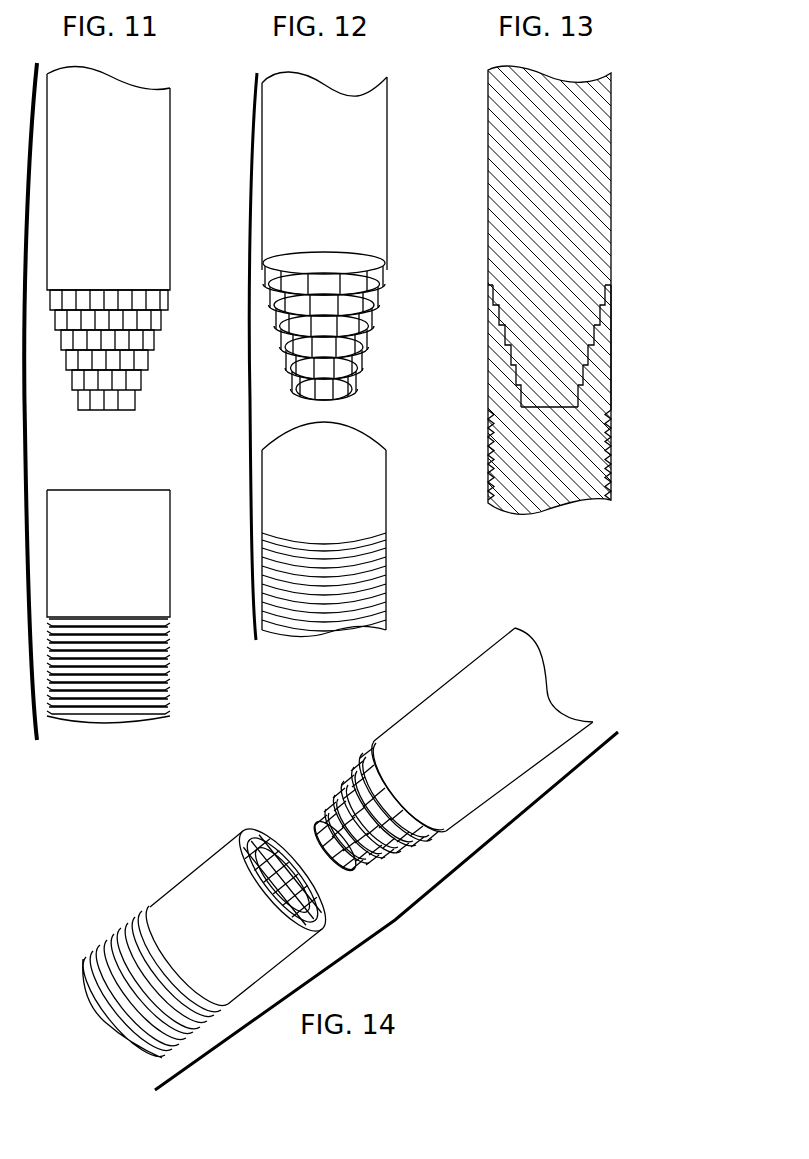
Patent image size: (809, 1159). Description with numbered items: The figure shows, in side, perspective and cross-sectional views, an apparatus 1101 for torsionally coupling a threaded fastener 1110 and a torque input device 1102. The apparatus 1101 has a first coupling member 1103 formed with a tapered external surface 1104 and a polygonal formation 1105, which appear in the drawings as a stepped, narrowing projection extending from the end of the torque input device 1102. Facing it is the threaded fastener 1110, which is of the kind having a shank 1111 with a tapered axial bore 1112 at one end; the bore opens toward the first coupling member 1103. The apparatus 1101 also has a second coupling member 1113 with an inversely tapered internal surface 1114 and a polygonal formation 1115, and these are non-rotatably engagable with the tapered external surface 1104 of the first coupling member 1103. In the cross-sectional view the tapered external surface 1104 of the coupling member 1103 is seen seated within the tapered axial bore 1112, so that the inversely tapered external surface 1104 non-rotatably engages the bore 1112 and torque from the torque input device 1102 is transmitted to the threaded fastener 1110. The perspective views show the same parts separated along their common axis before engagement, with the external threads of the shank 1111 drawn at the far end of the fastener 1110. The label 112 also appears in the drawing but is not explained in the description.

In FIG. 11, the apparatus 1101 is at (186, 103).
In FIG. 12, the apparatus 1101 is at (406, 120).
In FIG. 13, the apparatus 1101 is at (640, 140).
In FIG. 14, the apparatus 1101 is at (562, 655).
In FIG. 11, the torque input device 1102 is at (183, 265).
In FIG. 12, the torque input device 1102 is at (405, 275).
In FIG. 13, the torque input device 1102 is at (620, 292).
In FIG. 14, the torque input device 1102 is at (410, 700).
In FIG. 11, the first coupling member 1103 is at (160, 367).
In FIG. 12, the first coupling member 1103 is at (381, 338).
In FIG. 13, the first coupling member 1103 is at (593, 379).
In FIG. 14, the first coupling member 1103 is at (337, 770).
In FIG. 11, the tapered external surface 1104 is at (138, 362).
In FIG. 12, the tapered external surface 1104 is at (300, 340).
In FIG. 13, the tapered external surface 1104 is at (605, 318).
In FIG. 11, the polygonal formation 1105 is at (148, 325).
In FIG. 12, the polygonal formation 1105 is at (313, 307).
In FIG. 13, the polygonal formation 1105 is at (593, 341).
In FIG. 11, the threaded fastener 1110 is at (175, 514).
In FIG. 12, the threaded fastener 1110 is at (395, 461).
In FIG. 14, the threaded fastener 1110 is at (225, 838).
In FIG. 11, the shank 1111 is at (173, 540).
In FIG. 12, the shank 1111 is at (395, 520).
In FIG. 13, the shank 1111 is at (622, 462).
In FIG. 14, the shank 1111 is at (170, 878).
In FIG. 11, the tapered axial bore 1112 is at (136, 482).
In FIG. 13, the tapered axial bore 1112 is at (553, 355).
In FIG. 14, the tapered axial bore 1112 is at (297, 905).
In FIG. 12, the second coupling member 1113 is at (363, 412).
In FIG. 13, the second coupling member 1113 is at (622, 407).
In FIG. 14, the second coupling member 1113 is at (235, 820).
In FIG. 13, the inversely tapered internal surface 1114 is at (593, 358).
In FIG. 14, the inversely tapered internal surface 1114 is at (262, 848).
In FIG. 13, the polygonal formation 1115 is at (580, 395).
In FIG. 14, the polygonal formation 1115 is at (274, 848).
In FIG. 12, the pipe section 112 is at (283, 420).